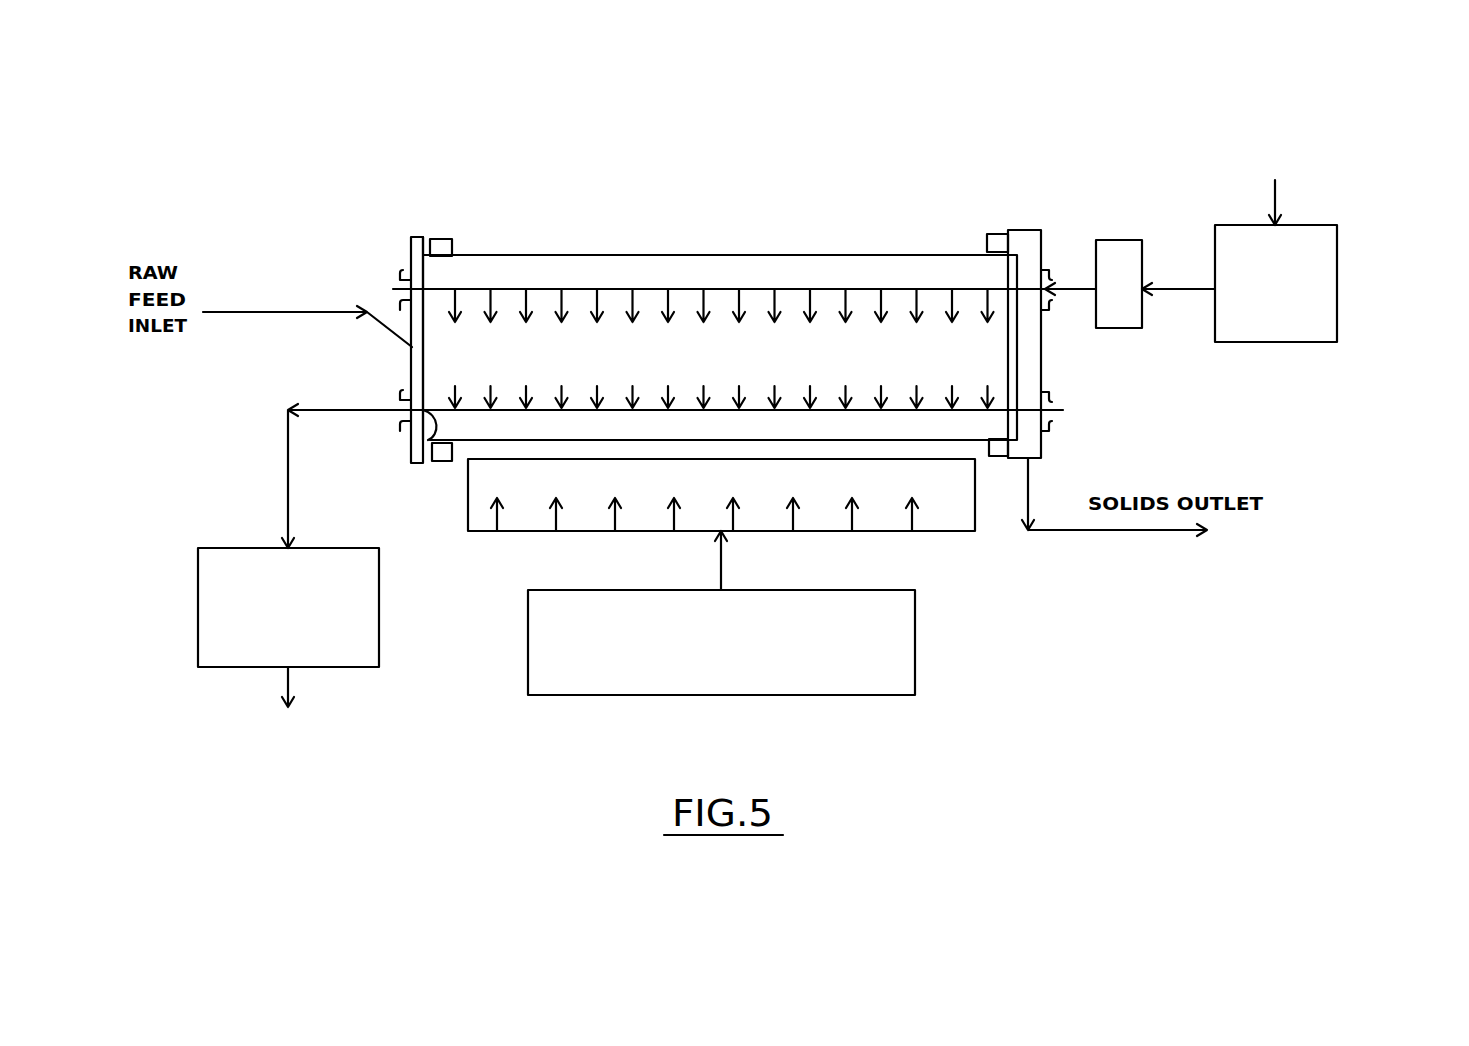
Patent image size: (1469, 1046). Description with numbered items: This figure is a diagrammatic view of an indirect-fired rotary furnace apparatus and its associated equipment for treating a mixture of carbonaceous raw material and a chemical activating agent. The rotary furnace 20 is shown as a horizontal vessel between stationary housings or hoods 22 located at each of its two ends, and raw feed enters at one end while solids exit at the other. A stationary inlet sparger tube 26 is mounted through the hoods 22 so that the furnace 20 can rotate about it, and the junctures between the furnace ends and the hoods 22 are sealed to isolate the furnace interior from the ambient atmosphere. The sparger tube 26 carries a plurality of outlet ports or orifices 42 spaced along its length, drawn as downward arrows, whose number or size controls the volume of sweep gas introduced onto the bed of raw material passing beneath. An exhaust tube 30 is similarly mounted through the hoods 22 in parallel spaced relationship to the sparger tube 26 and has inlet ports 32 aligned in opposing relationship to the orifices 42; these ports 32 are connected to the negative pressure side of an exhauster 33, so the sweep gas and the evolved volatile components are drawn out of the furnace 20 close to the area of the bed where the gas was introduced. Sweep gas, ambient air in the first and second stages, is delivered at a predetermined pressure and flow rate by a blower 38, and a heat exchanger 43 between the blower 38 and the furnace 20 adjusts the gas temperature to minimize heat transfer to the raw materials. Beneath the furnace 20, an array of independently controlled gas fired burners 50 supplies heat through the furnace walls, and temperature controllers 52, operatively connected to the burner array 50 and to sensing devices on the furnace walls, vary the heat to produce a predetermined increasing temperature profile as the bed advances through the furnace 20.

The rotary furnace 20 is at (833, 253).
The stationary housings or hoods 22 is at (421, 237).
The inlet sparger tube 26 is at (543, 289).
The exhaust tube 30 is at (423, 448).
The inlet ports 32 is at (595, 380).
The exhauster 33 is at (198, 608).
The blower 38 is at (1337, 283).
The outlet ports or orifices 42 is at (490, 318).
The heat exchanger 43 is at (1120, 240).
The gas fired burners 50 is at (468, 497).
The temperature controllers 52 is at (915, 640).